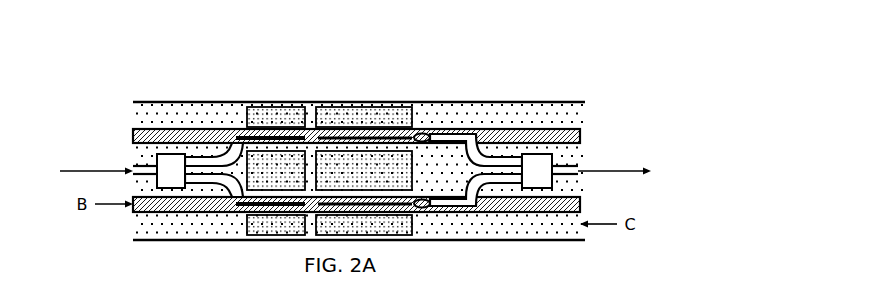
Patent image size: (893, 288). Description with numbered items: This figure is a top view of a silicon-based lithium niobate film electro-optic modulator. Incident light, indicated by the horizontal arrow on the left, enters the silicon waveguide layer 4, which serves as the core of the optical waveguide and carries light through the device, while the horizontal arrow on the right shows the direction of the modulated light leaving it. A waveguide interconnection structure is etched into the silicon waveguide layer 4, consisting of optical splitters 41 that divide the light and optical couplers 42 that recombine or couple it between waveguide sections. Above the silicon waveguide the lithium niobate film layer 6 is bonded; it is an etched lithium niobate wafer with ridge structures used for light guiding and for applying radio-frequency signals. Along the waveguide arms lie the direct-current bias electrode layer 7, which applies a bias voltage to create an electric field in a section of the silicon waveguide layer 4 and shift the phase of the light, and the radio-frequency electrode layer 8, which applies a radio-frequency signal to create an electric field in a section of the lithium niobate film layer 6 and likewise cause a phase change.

The silicon waveguide layer 4 is at (132, 167).
The optical splitter 41 is at (165, 167).
The optical coupler 42 is at (432, 203).
The lithium niobate film layer 6 is at (572, 132).
The direct-current bias electrode layer 7 is at (260, 227).
The radio-frequency electrode layer 8 is at (362, 225).